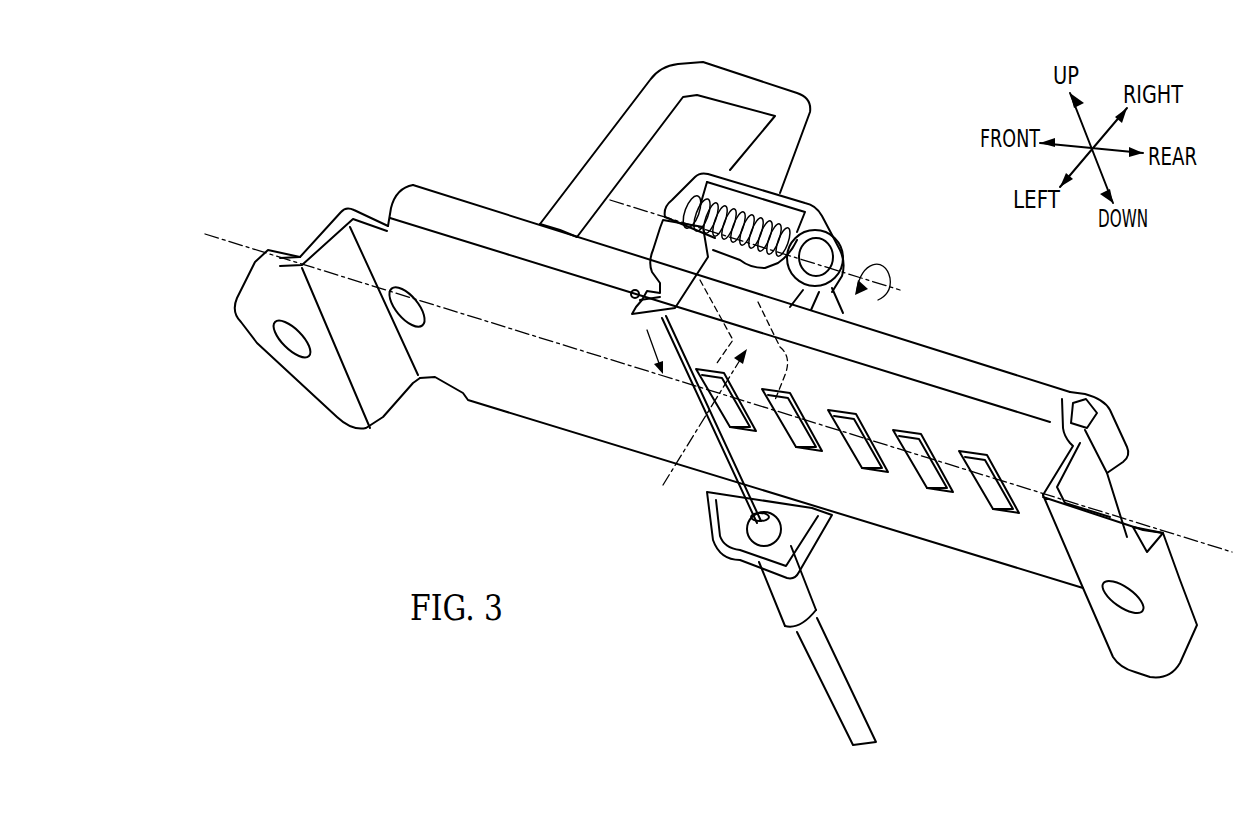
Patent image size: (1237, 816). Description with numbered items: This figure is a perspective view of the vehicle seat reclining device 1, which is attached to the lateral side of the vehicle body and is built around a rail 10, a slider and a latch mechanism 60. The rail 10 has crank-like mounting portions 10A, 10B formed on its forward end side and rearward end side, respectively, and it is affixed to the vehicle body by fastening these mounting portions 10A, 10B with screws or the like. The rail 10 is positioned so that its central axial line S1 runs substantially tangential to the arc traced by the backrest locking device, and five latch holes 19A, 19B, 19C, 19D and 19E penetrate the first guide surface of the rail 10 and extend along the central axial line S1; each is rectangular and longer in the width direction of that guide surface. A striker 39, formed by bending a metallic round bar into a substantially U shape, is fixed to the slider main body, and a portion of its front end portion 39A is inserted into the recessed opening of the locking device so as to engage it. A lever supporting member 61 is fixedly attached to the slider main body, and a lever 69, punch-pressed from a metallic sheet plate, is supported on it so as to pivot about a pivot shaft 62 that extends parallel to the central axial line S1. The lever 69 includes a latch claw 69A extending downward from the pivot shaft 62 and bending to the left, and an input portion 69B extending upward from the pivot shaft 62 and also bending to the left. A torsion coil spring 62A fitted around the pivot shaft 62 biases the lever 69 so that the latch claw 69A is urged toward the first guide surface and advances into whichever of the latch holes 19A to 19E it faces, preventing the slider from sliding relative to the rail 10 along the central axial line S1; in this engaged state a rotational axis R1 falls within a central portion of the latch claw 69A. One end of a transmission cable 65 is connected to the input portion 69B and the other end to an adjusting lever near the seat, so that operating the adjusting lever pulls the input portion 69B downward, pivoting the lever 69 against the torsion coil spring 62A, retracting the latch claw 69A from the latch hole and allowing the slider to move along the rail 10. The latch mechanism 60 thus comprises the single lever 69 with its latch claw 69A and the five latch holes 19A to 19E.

The vehicle seat reclining device 1 is at (510, 136).
The rail 10 is at (436, 172).
The mounting portion 10A is at (265, 330).
The mounting portion 10B is at (1170, 640).
The latch hole 19A is at (742, 443).
The latch hole 19B is at (800, 450).
The latch hole 19C is at (867, 473).
The latch hole 19D is at (933, 491).
The latch hole 19E is at (993, 514).
The striker 39 is at (766, 70).
The front end portion 39A is at (575, 207).
The latch mechanism 60 is at (788, 182).
The lever supporting member 61 is at (828, 233).
The pivot shaft 62 is at (826, 254).
The torsion coil spring 62A is at (772, 222).
The transmission cable 65 is at (817, 660).
The lever 69 is at (665, 225).
The latch claw 69A is at (720, 397).
The input portion 69B is at (645, 318).
The rotational axis R1 is at (691, 432).
The central axial line S1 is at (705, 383).